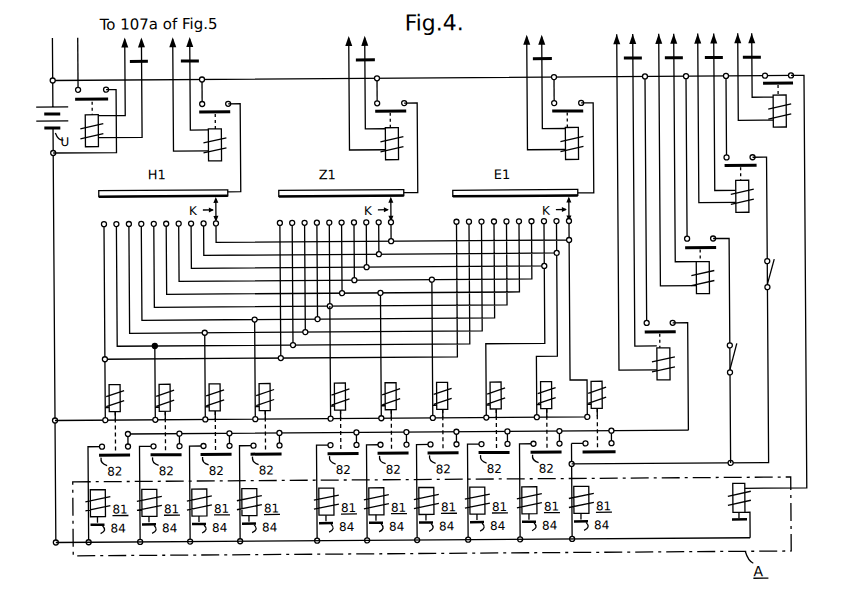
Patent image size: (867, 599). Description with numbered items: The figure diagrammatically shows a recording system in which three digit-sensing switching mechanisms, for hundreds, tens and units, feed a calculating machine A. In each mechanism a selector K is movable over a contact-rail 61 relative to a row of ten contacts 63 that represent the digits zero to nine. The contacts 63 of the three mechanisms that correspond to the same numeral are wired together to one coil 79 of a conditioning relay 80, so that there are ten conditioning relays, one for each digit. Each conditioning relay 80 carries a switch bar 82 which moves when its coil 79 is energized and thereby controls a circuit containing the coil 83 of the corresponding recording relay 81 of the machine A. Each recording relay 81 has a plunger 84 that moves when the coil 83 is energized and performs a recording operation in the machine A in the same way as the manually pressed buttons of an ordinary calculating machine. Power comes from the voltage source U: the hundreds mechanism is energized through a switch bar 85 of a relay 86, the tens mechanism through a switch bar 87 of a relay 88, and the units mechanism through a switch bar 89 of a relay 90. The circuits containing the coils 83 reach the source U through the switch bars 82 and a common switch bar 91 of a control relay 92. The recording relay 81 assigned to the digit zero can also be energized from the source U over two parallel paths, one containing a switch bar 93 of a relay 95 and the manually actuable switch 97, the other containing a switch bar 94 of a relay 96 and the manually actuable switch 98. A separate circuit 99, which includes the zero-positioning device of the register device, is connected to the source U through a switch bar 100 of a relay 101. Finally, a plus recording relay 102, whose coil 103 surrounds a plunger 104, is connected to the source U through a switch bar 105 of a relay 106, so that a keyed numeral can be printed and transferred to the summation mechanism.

The contact-rails 61 is at (118, 191).
The contacts 63 is at (103, 226).
The coil 79 is at (370, 375).
The conditioning relay 80 is at (102, 396).
The recording relay 81 is at (348, 501).
The switch bar 82 is at (613, 456).
The coil 83 is at (358, 490).
The plunger 84 is at (349, 524).
The switch bar 85 is at (212, 110).
The relay 86 is at (198, 149).
The switch bar 87 is at (389, 110).
The relay 88 is at (376, 148).
The switch bar 89 is at (566, 111).
The relay 90 is at (552, 149).
The switch bar 91 is at (659, 331).
The control relay 92 is at (645, 367).
The switch bar 93 is at (700, 247).
The switch bar 94 is at (739, 167).
The relay 95 is at (685, 282).
The relay 96 is at (723, 204).
The manually actuable switch 97 is at (757, 375).
The manually actuable switch 98 is at (795, 291).
The circuit 99 is at (73, 59).
The switch bar 100 is at (86, 91).
The relay 101 is at (137, 135).
The plus recording relay 102 is at (717, 505).
The coil 103 is at (746, 502).
The plunger 104 is at (728, 520).
The switch bar 105 is at (777, 84).
The relay 106 is at (768, 116).